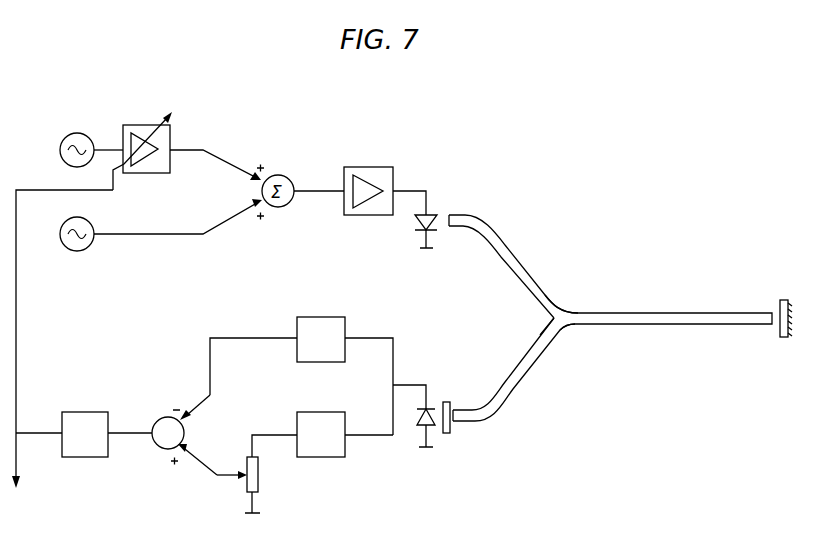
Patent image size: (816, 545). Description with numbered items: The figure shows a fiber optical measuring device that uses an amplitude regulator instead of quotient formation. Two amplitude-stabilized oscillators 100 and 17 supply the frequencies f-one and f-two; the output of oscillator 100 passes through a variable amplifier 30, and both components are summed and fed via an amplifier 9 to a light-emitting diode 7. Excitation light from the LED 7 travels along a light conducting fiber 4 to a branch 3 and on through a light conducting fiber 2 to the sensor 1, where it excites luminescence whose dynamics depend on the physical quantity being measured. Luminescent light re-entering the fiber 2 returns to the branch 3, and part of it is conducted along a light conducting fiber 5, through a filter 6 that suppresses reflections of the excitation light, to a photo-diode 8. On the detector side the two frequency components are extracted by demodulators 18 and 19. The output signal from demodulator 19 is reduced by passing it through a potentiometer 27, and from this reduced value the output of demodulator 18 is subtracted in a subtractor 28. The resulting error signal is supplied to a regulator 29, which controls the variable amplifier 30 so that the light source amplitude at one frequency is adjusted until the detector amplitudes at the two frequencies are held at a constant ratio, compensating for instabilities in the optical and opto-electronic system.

The sensor 1 is at (777, 348).
The light conducting fiber 2 is at (660, 312).
The branch 3 is at (563, 303).
The light conducting fiber 4 is at (513, 250).
The light conducting fiber 5 is at (532, 360).
The filter 6 is at (452, 438).
The light-emitting diode 7 is at (418, 233).
The photo-diode 8 is at (451, 377).
The amplifier 9 is at (376, 167).
The amplitude-stabilized oscillator 17 is at (92, 249).
The demodulator 18 is at (347, 323).
The demodulator 19 is at (345, 453).
The potentiometer 27 is at (260, 483).
The subtractor 28 is at (160, 453).
The regulator 29 is at (88, 412).
The variable amplifier 30 is at (135, 125).
The amplitude-stabilized oscillator 100 is at (79, 136).